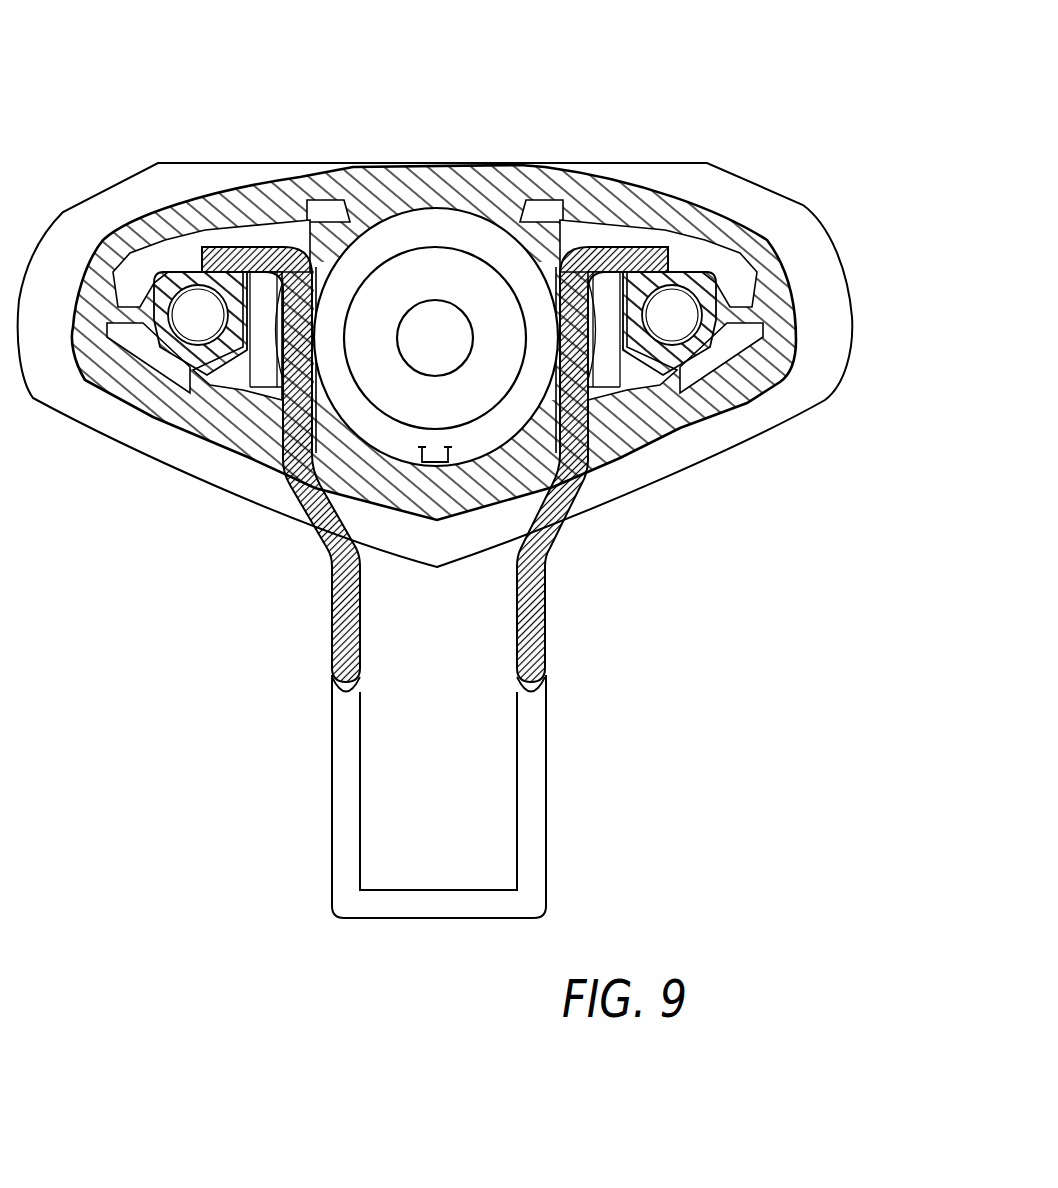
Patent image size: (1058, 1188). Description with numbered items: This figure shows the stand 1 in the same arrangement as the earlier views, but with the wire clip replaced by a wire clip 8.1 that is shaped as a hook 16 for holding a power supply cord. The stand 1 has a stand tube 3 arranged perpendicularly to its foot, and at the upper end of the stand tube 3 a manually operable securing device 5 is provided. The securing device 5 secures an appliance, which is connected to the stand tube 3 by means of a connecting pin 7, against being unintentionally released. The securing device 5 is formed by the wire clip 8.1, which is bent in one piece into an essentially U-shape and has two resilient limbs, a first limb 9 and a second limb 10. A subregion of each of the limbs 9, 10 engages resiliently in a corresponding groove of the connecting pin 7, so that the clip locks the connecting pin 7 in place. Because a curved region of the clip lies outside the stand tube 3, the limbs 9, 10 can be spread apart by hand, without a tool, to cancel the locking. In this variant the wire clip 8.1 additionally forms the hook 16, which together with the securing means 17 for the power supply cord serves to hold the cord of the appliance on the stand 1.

The stand 1 is at (650, 125).
The stand tube 3 is at (464, 182).
The securing device 5 is at (322, 322).
The connecting pin 7 is at (408, 233).
The first limb 9 is at (345, 596).
The second limb 10 is at (530, 615).
The wire clip with hook 8.1 is at (530, 778).
The hook 16 is at (598, 838).
The securing means for the power supply cord 17 is at (598, 838).